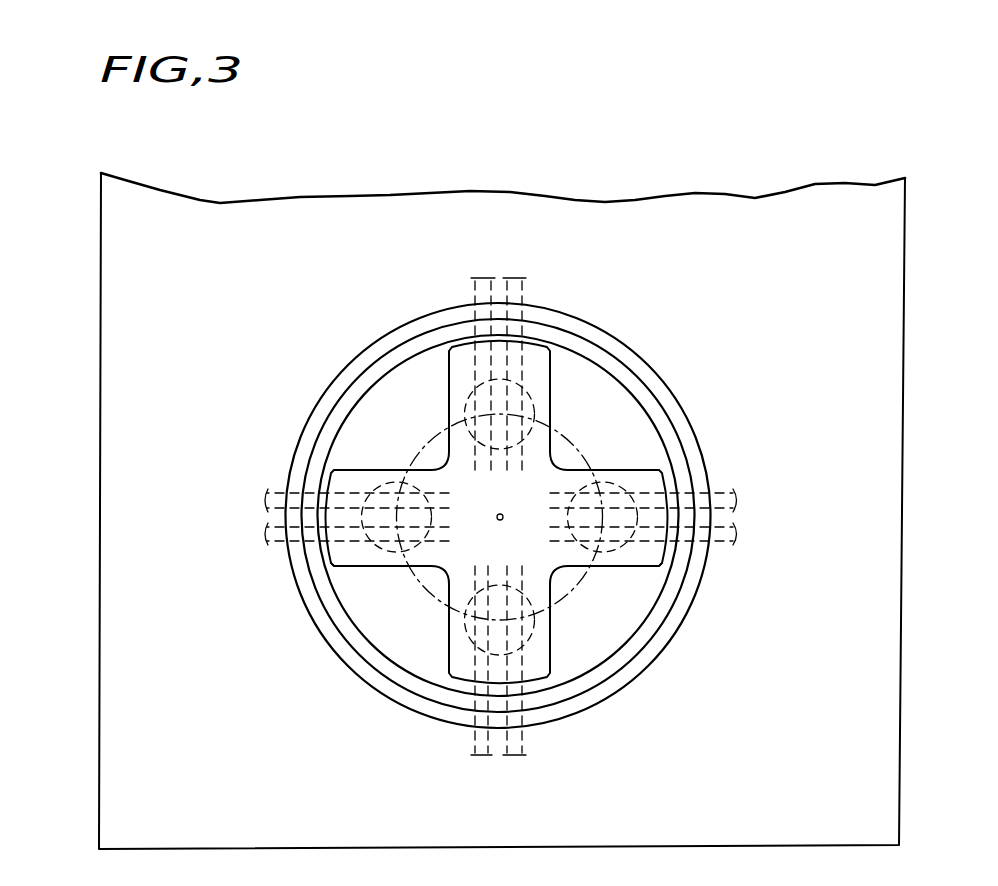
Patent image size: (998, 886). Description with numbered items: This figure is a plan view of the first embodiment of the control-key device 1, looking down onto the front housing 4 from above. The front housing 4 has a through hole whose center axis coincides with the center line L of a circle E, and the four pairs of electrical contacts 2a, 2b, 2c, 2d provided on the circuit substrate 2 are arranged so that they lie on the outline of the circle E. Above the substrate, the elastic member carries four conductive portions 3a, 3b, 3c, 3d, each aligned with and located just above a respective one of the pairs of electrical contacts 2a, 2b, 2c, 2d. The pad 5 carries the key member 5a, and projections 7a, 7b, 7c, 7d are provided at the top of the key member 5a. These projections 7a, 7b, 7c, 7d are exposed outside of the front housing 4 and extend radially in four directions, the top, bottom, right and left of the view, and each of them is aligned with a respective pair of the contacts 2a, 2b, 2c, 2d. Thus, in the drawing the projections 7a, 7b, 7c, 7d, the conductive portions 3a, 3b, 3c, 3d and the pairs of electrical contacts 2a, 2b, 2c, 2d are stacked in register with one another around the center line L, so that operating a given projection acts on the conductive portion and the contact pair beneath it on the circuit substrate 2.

The control-key device 1 is at (654, 141).
The front housing 4 is at (793, 200).
The pad 5 is at (370, 655).
The key member 5a is at (637, 413).
The projection 7a is at (352, 572).
The projection 7b is at (645, 568).
The projection 7c is at (449, 390).
The projection 7d is at (548, 656).
The conductive portion 3a is at (386, 545).
The conductive portion 3b is at (596, 553).
The conductive portion 3c is at (475, 420).
The conductive portion 3d is at (530, 626).
The pair of electrical contacts 2a is at (352, 466).
The pair of electrical contacts 2b is at (650, 492).
The pair of electrical contacts 2c is at (545, 352).
The pair of electrical contacts 2d is at (468, 662).
The center line L is at (503, 513).
The circle E is at (583, 452).
The circuit substrate 2 is at (93, 511).